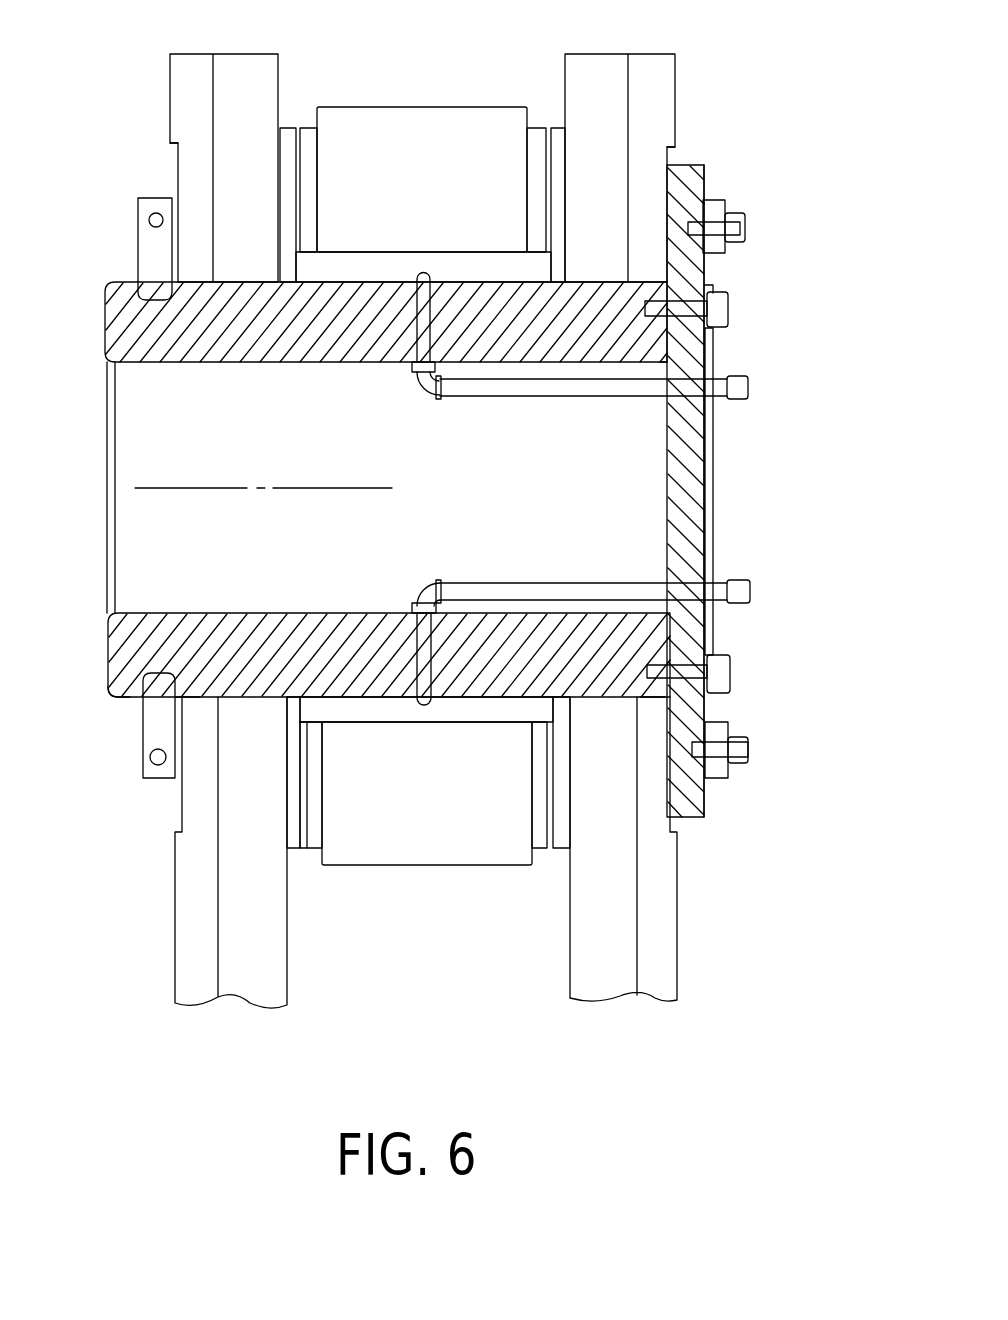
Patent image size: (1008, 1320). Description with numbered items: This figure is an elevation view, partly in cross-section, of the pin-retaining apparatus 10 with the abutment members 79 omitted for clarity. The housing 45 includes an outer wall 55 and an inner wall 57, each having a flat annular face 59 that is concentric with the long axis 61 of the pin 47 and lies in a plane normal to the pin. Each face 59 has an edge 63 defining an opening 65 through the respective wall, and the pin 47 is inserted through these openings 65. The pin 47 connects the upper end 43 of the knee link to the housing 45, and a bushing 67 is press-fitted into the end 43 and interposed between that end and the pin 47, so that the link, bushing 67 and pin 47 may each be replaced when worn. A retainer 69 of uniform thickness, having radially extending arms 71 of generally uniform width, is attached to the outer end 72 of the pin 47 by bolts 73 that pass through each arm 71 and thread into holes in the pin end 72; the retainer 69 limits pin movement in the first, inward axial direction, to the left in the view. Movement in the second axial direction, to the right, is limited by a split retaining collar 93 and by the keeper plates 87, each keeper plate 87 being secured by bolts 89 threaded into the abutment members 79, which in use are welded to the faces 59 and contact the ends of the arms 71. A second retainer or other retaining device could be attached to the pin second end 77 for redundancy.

The apparatus 10 is at (773, 263).
The upper end of the knee link 43 is at (370, 107).
The housing 45 is at (248, 1005).
The pin 47 is at (112, 697).
The outer wall 55 is at (677, 67).
The inner wall 57 is at (172, 105).
The annular face 59 is at (178, 178).
The long axis of the pin 61 is at (188, 488).
The edge 63 is at (181, 281).
The opening 65 is at (188, 700).
The bushing 67 is at (352, 266).
The retainer 69 is at (696, 482).
The arm 71 is at (707, 165).
The outer end of the pin 72 is at (668, 352).
The bolt 73 is at (735, 307).
The second end of the pin 77 is at (108, 650).
The abutment member 79 is at (713, 545).
The keeper plate 87 is at (725, 200).
The bolt 89 is at (750, 751).
The split retaining collar 93 is at (145, 733).